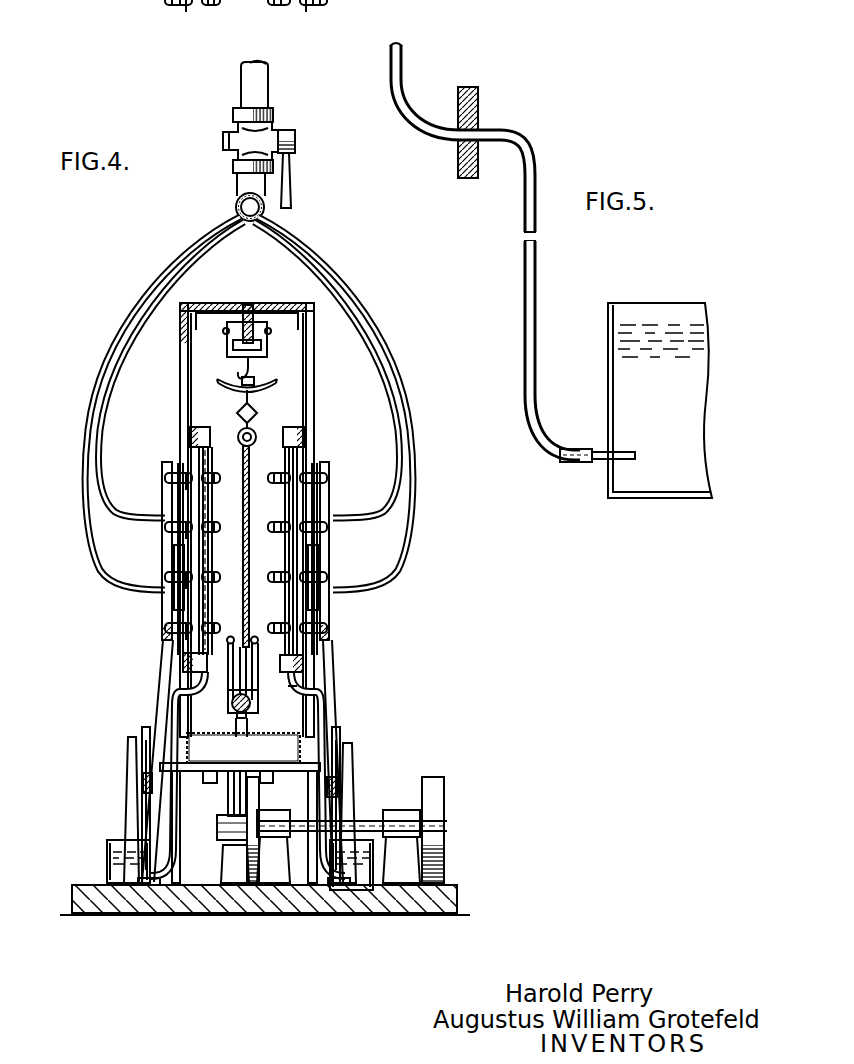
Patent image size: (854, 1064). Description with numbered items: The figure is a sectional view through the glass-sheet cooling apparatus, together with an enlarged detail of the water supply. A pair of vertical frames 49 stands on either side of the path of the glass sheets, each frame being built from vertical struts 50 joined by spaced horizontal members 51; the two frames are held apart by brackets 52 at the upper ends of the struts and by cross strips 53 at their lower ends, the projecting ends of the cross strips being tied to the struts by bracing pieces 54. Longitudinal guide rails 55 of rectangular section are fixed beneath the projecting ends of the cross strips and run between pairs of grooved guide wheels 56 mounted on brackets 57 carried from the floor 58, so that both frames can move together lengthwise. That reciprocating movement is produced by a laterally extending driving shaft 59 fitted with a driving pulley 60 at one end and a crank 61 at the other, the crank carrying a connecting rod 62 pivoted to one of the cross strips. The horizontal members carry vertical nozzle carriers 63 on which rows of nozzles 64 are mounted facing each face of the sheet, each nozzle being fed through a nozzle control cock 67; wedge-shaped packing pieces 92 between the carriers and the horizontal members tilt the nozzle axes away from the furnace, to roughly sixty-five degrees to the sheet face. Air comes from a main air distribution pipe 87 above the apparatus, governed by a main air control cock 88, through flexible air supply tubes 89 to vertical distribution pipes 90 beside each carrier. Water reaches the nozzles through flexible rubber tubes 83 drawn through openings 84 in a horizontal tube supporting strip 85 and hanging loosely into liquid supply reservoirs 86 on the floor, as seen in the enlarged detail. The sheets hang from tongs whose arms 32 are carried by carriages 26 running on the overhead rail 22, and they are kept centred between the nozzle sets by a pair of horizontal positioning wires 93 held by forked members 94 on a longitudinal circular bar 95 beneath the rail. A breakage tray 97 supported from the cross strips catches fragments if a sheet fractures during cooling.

In FIG. 4, the rail 22 is at (247, 318).
In FIG. 4, the carriage 26 is at (243, 364).
In FIG. 4, the arm 32 is at (257, 414).
In FIG. 4, the vertical frame 49 is at (314, 352).
In FIG. 4, the vertical strut 50 is at (181, 395).
In FIG. 4, the horizontal member 51 is at (191, 433).
In FIG. 4, the bracket 52 is at (260, 307).
In FIG. 4, the cross strip 53 is at (193, 773).
In FIG. 4, the bracing piece 54 is at (165, 672).
In FIG. 4, the guide rail 55 is at (143, 783).
In FIG. 4, the grooved guide wheel 56 is at (341, 745).
In FIG. 4, the bracket 57 is at (351, 762).
In FIG. 4, the floor 58 is at (200, 895).
In FIG. 4, the driving shaft 59 is at (371, 823).
In FIG. 4, the driving pulley 60 is at (444, 806).
In FIG. 4, the crank 61 is at (250, 852).
In FIG. 4, the connecting rod 62 is at (230, 814).
In FIG. 4, the nozzle carrier 63 is at (203, 547).
In FIG. 4, the nozzle 64 is at (221, 483).
In FIG. 4, the nozzle control cock 67 is at (170, 478).
In FIG. 4, the flexible rubber tube 83 is at (287, 502).
In FIG. 5, the flexible rubber tube 83 is at (524, 265).
In FIG. 5, the opening 84 is at (480, 125).
In FIG. 4, the tube supporting strip 85 is at (292, 692).
In FIG. 5, the tube supporting strip 85 is at (479, 95).
In FIG. 4, the liquid supply reservoir 86 is at (110, 853).
In FIG. 5, the liquid supply reservoir 86 is at (624, 393).
In FIG. 4, the main air distribution pipe 87 is at (236, 208).
In FIG. 4, the main air control cock 88 is at (244, 132).
In FIG. 4, the flexible air supply tube 89 is at (372, 335).
In FIG. 4, the vertical distribution pipe 90 is at (162, 537).
In FIG. 4, the packing piece 92 is at (204, 430).
In FIG. 4, the positioning wire 93 is at (252, 632).
In FIG. 4, the forked member 94 is at (231, 678).
In FIG. 4, the circular bar 95 is at (233, 710).
In FIG. 4, the breakage tray 97 is at (243, 748).